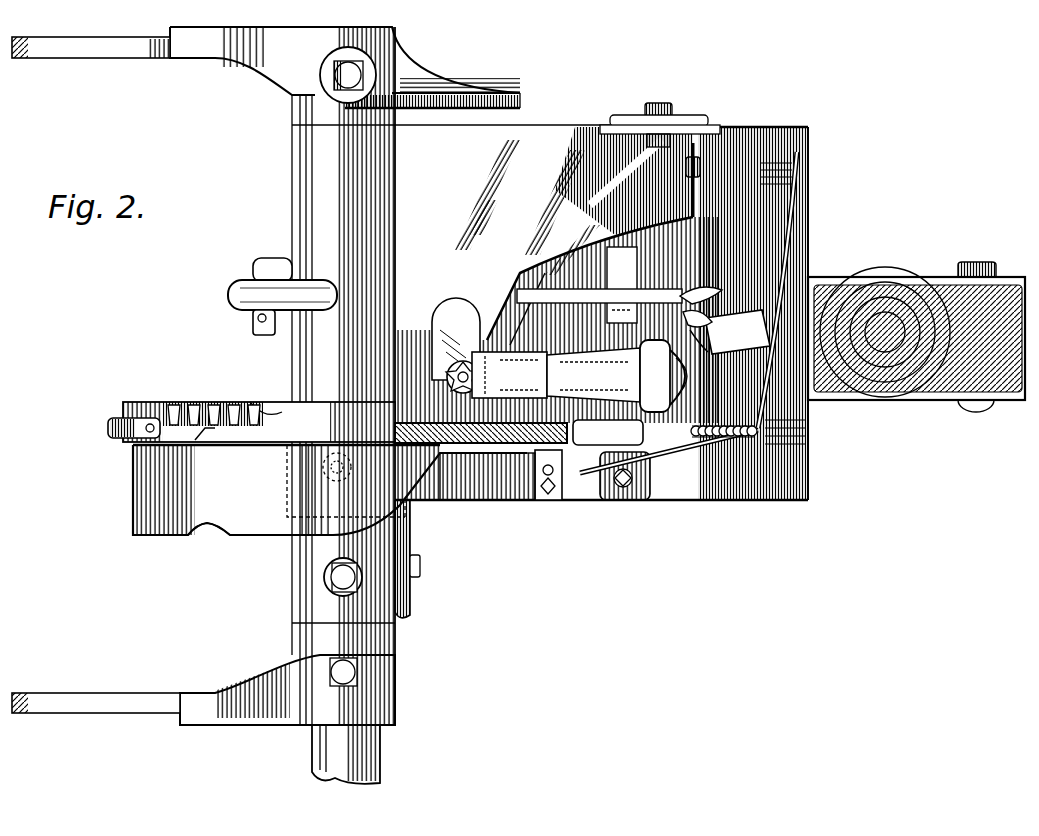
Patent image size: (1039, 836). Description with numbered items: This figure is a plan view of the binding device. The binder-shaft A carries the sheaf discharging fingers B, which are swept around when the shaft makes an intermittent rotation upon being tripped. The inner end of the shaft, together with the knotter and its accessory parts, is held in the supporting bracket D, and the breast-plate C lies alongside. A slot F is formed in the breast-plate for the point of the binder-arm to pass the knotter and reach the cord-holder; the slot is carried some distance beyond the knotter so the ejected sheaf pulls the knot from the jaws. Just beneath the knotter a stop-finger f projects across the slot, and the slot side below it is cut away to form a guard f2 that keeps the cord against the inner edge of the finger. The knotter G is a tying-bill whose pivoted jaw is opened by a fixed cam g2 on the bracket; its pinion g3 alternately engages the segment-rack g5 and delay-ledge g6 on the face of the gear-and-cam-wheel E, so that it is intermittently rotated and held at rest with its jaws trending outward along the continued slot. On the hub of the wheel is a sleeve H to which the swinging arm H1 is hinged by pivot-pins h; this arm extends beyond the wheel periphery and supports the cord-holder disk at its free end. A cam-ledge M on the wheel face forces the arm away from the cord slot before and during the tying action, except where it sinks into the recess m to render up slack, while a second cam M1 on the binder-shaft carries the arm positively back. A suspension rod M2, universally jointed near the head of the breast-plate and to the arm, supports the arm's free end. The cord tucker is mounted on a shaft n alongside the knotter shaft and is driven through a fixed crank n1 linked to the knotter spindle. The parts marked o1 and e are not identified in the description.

The sheaf discharging fingers B is at (203, 371).
The supporting bracket D is at (385, 376).
The breast-plate C is at (748, 140).
The suspension rod M2 is at (800, 222).
The tucker shaft n is at (619, 285).
The slot F is at (737, 332).
The stop-finger f is at (701, 323).
The guard f2 is at (710, 341).
The knotter G is at (661, 376).
The fixed cam g2 is at (593, 375).
The pinion g3 is at (528, 402).
The segment-rack g5 is at (236, 403).
The delay-ledge g6 is at (160, 403).
The pin o1 is at (108, 430).
The gear-and-cam-wheel E is at (481, 433).
The sleeve H is at (346, 481).
The pivot-pins h is at (337, 467).
The cam-ledge M is at (330, 490).
The recess m is at (200, 535).
The swinging arm H1 is at (487, 476).
The fixed crank n1 is at (548, 474).
The screw bracket e is at (611, 460).
The second cam M1 is at (412, 528).
The binder-shaft A is at (368, 757).